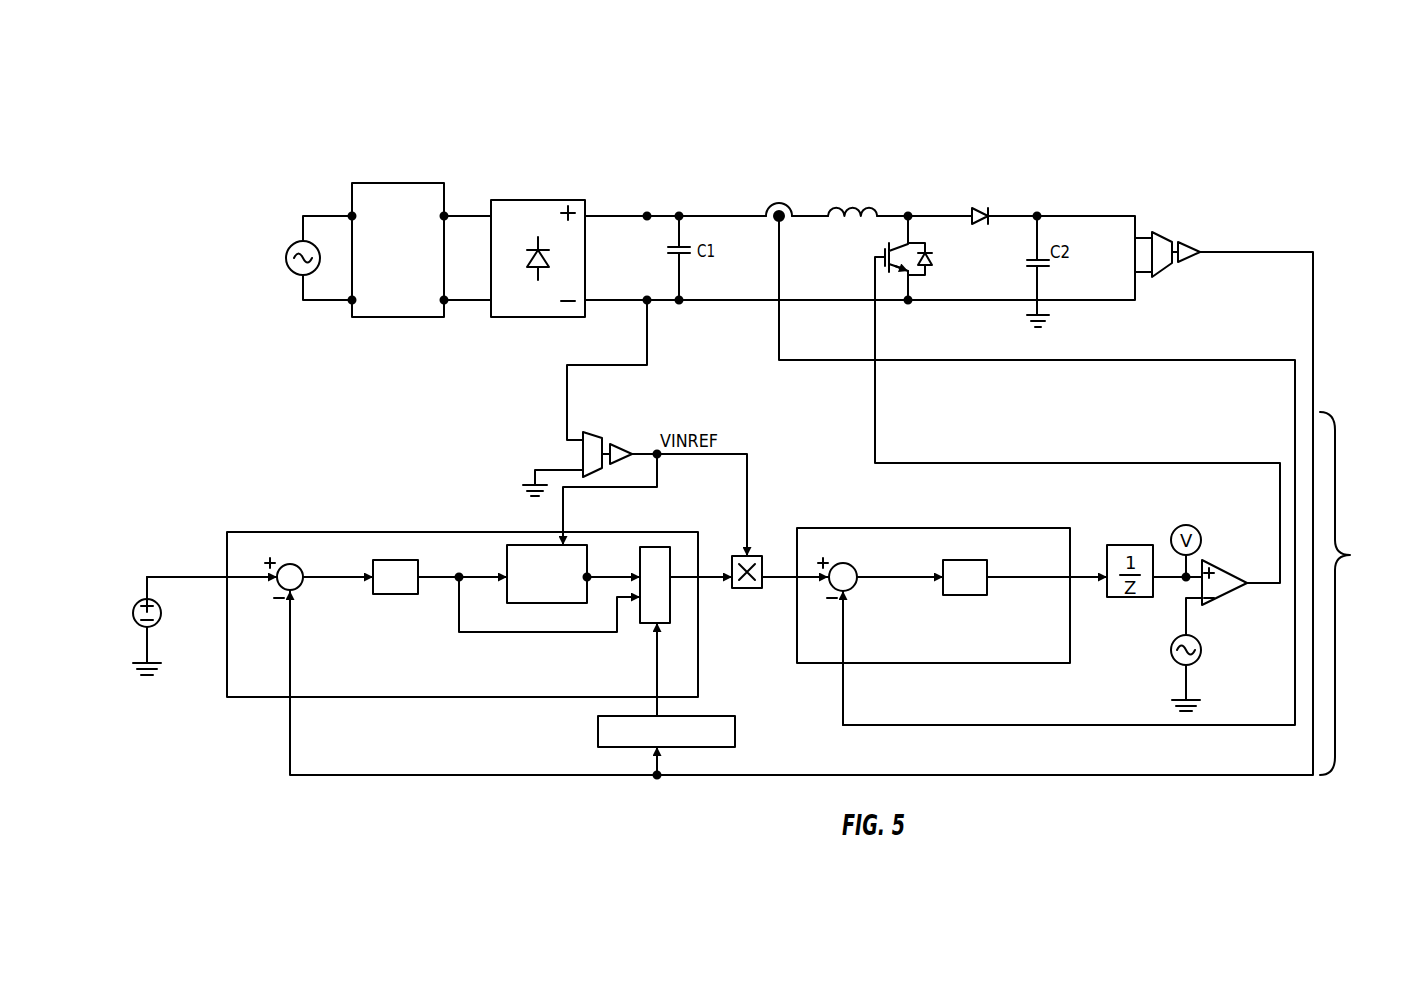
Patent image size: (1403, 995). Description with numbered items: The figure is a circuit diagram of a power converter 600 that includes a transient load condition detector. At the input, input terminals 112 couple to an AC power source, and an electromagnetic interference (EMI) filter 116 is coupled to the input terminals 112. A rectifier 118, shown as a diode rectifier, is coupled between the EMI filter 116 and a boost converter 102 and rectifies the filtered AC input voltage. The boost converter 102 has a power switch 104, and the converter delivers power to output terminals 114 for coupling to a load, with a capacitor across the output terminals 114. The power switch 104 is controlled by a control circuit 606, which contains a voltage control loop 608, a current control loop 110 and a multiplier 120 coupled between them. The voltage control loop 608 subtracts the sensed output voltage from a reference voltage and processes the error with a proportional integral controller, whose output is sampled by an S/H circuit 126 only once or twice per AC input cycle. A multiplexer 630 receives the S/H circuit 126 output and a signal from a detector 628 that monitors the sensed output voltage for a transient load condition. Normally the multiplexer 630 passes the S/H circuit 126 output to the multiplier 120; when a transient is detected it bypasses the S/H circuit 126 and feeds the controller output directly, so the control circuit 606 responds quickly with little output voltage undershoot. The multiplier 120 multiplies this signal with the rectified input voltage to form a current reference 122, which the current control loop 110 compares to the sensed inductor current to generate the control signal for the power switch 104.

The power converter 600 is at (1128, 124).
The boost converter 102 is at (1030, 424).
The power switch 104 is at (890, 246).
The input terminals 112 is at (327, 216).
The output terminals 114 is at (1125, 213).
The electromagnetic interference (EMI) filter 116 is at (390, 183).
The rectifier 118 is at (534, 200).
The multiplier 120 is at (758, 589).
The current reference 122 is at (778, 572).
The S/H circuit 126 is at (580, 545).
The multiplexer 630 is at (662, 547).
The voltage control loop 608 is at (245, 697).
The current control loop 110 is at (820, 663).
The detector 628 is at (687, 747).
The control circuit 606 is at (1359, 593).